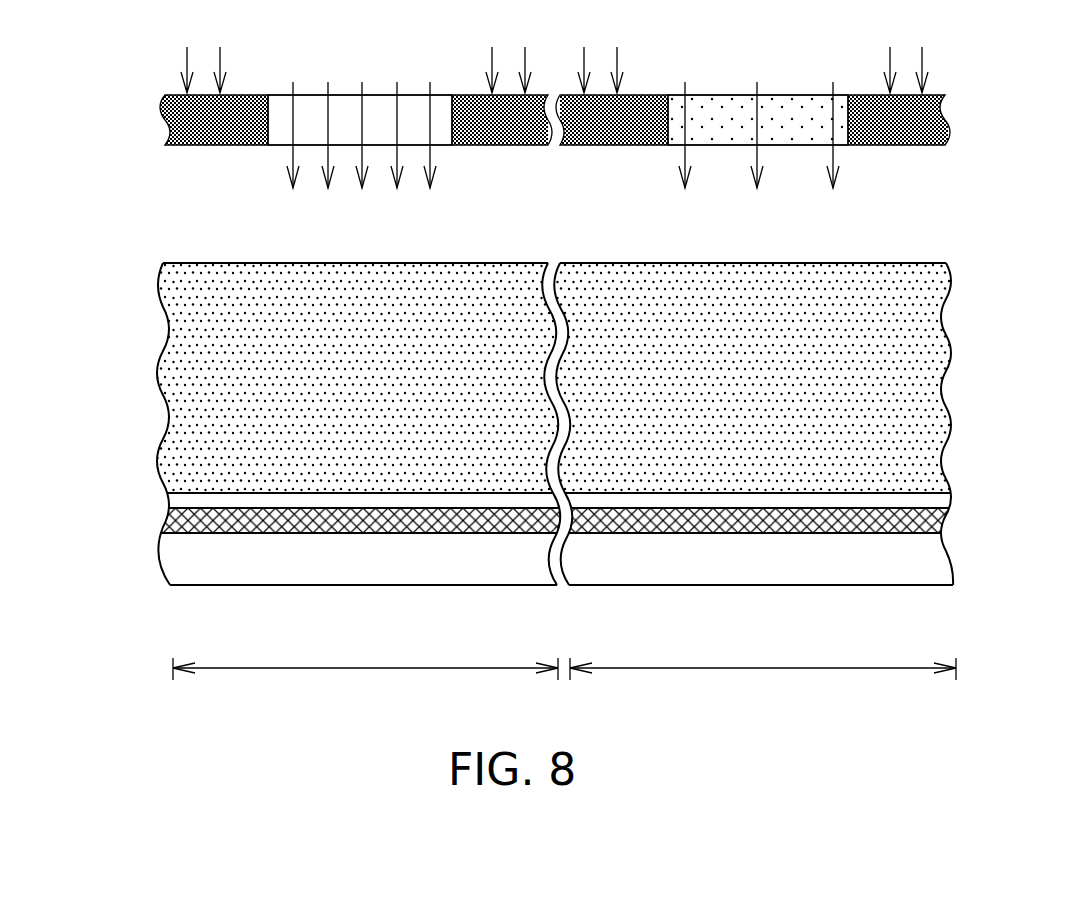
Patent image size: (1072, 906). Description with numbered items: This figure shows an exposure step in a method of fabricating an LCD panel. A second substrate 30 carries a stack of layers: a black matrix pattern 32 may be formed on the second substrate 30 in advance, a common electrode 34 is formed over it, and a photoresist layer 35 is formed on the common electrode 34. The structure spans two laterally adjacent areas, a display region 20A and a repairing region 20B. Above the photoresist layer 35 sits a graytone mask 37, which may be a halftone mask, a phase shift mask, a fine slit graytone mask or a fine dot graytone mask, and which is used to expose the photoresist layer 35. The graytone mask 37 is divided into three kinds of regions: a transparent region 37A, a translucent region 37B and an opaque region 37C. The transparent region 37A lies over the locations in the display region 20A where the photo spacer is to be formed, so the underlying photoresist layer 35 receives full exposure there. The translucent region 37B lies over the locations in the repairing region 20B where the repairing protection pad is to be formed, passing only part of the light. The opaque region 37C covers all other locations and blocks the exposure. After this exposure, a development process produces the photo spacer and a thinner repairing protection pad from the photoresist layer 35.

The graytone mask 37 is at (948, 81).
The transparent region 37A is at (343, 108).
The translucent region 37B is at (713, 108).
The opaque region 37C is at (198, 133).
The photoresist layer 35 is at (376, 392).
The common electrode 34 is at (179, 500).
The black matrix pattern 32 is at (186, 515).
The second substrate 30 is at (376, 575).
The display region 20A is at (365, 660).
The repairing region 20B is at (763, 660).